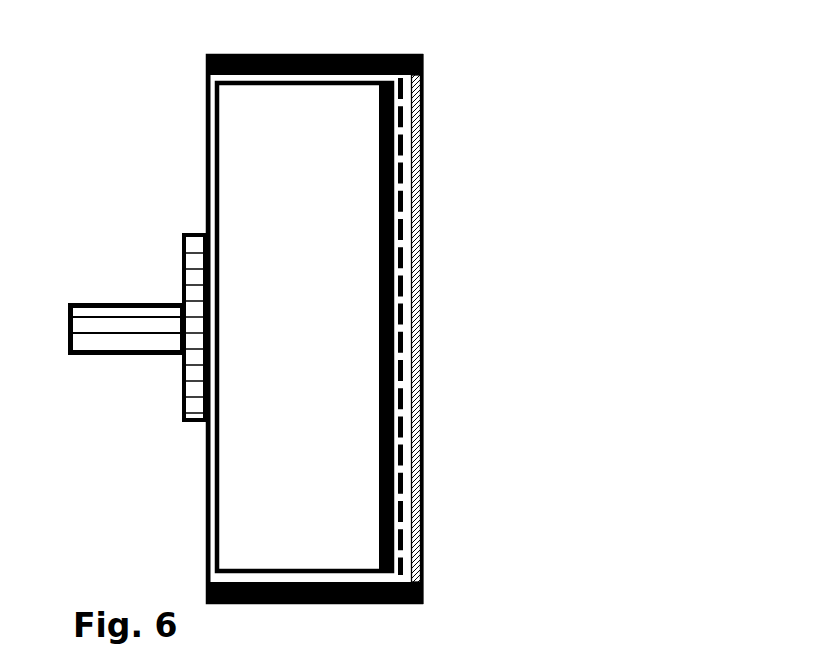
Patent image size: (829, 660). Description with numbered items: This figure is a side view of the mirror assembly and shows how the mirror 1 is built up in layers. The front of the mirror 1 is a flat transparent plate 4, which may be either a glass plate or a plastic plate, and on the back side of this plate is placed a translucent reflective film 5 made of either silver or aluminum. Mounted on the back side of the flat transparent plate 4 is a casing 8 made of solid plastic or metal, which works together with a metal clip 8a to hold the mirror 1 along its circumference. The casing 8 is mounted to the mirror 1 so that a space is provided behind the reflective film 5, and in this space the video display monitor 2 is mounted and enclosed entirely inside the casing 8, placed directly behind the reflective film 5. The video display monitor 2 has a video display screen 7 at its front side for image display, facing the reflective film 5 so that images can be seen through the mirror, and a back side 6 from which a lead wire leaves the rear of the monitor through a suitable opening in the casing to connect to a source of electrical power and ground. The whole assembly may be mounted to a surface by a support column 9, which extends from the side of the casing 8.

The mirror 1 is at (431, 51).
The video display monitor 2 is at (315, 207).
The flat transparent plate 4 is at (421, 237).
The translucent reflective film 5 is at (403, 337).
The back side 6 is at (214, 163).
The video display screen 7 is at (382, 452).
The casing 8 is at (206, 518).
The metal clip 8a is at (417, 591).
The support column 9 is at (120, 330).